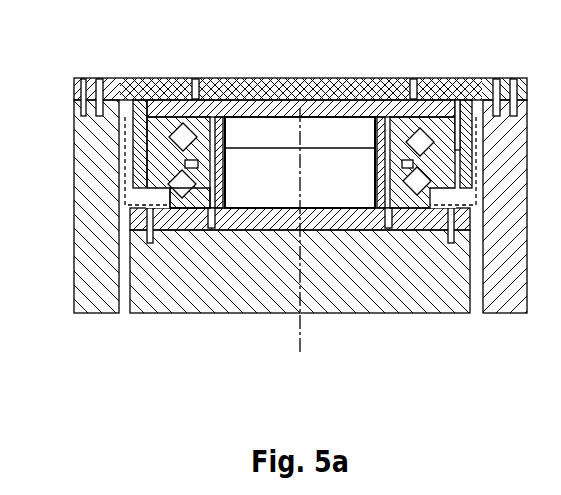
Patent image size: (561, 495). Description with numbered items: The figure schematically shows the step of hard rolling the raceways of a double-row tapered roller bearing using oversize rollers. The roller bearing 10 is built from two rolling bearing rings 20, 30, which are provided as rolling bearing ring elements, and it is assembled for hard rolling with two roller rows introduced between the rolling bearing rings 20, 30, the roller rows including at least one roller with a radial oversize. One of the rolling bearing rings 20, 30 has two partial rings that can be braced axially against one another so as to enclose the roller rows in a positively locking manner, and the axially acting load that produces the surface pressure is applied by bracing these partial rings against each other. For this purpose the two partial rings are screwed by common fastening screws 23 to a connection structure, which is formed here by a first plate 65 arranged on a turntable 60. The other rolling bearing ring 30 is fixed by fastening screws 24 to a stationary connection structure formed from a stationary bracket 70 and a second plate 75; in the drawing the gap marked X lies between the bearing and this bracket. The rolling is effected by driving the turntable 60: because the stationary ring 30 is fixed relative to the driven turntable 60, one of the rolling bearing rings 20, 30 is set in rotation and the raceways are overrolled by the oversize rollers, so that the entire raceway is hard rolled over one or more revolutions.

The roller bearing 10 is at (160, 118).
The rolling bearing ring 20 is at (428, 78).
The fastening screws 23 is at (190, 228).
The fastening screws 24 is at (137, 94).
The rolling bearing ring 30 is at (168, 163).
The turntable 60 is at (380, 298).
The first plate 65 is at (265, 228).
The stationary bracket 70 is at (504, 297).
The second plate 75 is at (262, 88).
The radial gap X is at (473, 148).